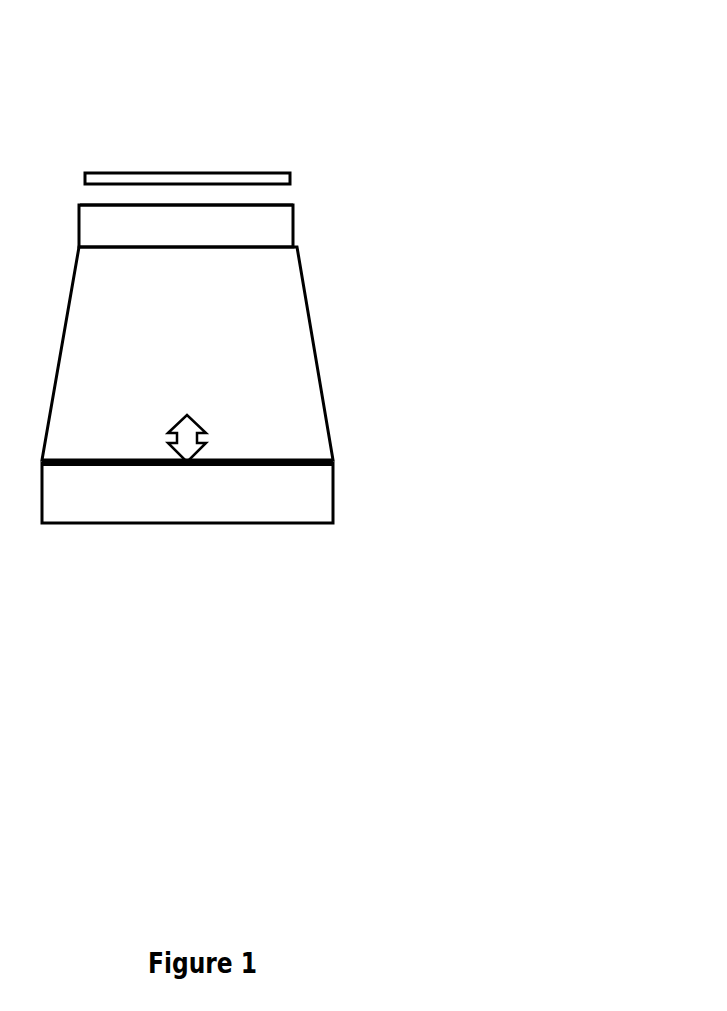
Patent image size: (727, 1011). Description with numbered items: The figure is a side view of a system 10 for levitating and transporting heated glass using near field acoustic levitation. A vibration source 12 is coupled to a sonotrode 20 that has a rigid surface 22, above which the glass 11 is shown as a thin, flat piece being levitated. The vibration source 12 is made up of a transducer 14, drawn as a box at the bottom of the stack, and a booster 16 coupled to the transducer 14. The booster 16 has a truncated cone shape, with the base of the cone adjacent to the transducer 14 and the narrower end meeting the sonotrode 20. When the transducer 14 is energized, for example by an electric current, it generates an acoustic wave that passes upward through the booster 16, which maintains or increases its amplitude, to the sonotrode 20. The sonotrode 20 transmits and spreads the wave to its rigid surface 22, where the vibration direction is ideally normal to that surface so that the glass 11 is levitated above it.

The system 10 is at (196, 138).
The glass 11 is at (293, 177).
The rigid surface 22 is at (277, 204).
The sonotrode 20 is at (293, 228).
The booster 16 is at (297, 343).
The vibration source 12 is at (345, 389).
The transducer 14 is at (267, 498).